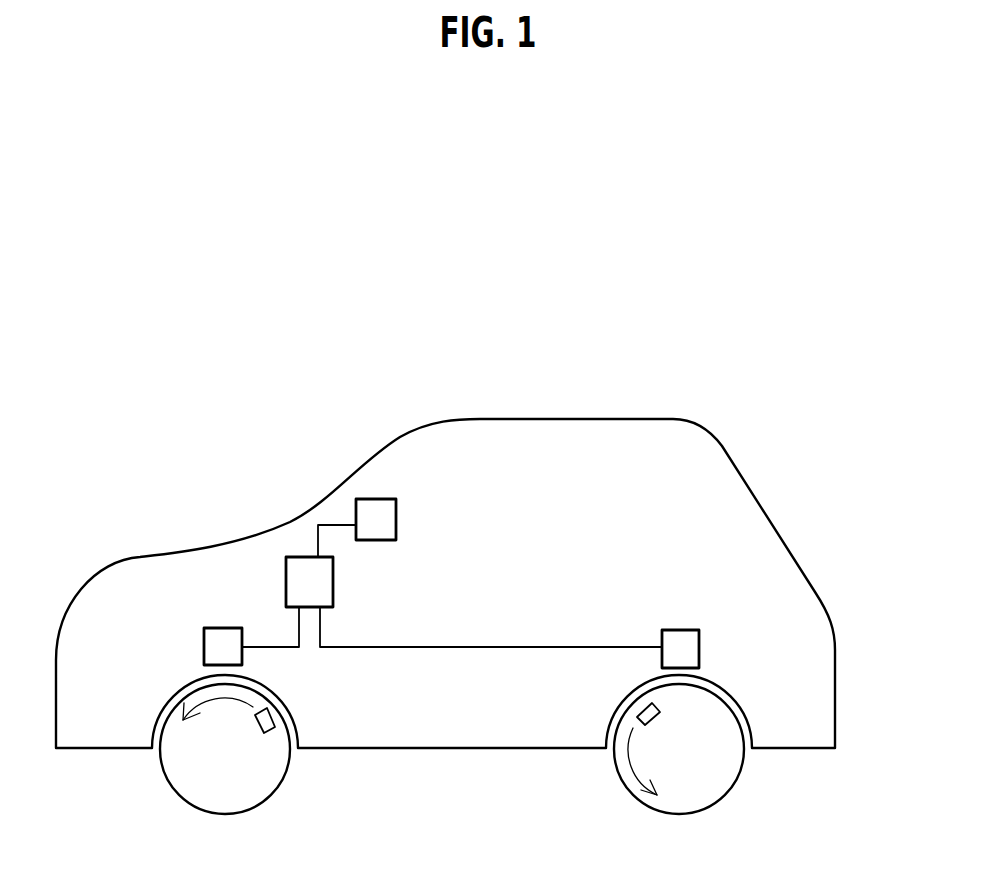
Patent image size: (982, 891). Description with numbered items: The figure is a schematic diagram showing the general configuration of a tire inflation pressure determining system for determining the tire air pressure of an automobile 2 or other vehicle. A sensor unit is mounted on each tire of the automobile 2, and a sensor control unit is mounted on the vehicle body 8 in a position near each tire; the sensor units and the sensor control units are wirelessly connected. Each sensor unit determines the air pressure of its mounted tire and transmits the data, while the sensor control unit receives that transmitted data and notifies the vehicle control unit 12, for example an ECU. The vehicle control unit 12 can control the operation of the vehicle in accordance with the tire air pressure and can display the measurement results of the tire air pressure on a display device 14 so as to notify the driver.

The automobile 2 is at (458, 483).
The vehicle body 8 is at (750, 526).
The vehicle control unit 12 is at (327, 584).
The display device 14 is at (390, 519).